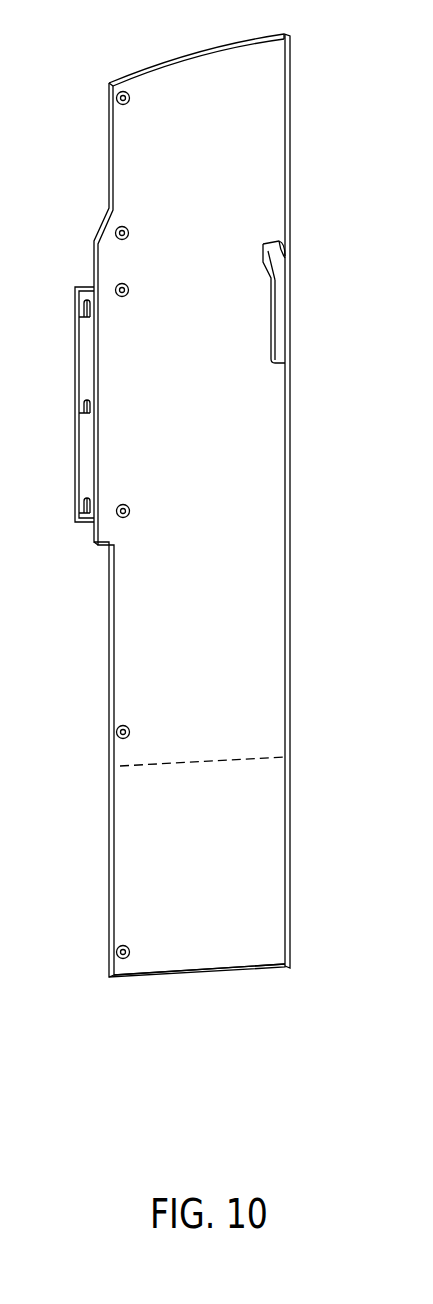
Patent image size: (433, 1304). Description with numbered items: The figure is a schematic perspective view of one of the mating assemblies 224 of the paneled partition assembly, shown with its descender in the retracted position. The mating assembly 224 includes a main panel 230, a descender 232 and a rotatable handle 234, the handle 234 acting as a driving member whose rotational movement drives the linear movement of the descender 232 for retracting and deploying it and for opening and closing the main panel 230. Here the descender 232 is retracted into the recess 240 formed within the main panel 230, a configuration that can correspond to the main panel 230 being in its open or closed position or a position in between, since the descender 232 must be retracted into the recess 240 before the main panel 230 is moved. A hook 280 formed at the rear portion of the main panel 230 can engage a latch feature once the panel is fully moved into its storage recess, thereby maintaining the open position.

The mating assembly 224 is at (76, 177).
The main panel 230 is at (299, 226).
The descender 232 is at (135, 878).
The rotatable handle 234 is at (285, 331).
The recess 240 is at (135, 808).
The hook 280 is at (79, 407).